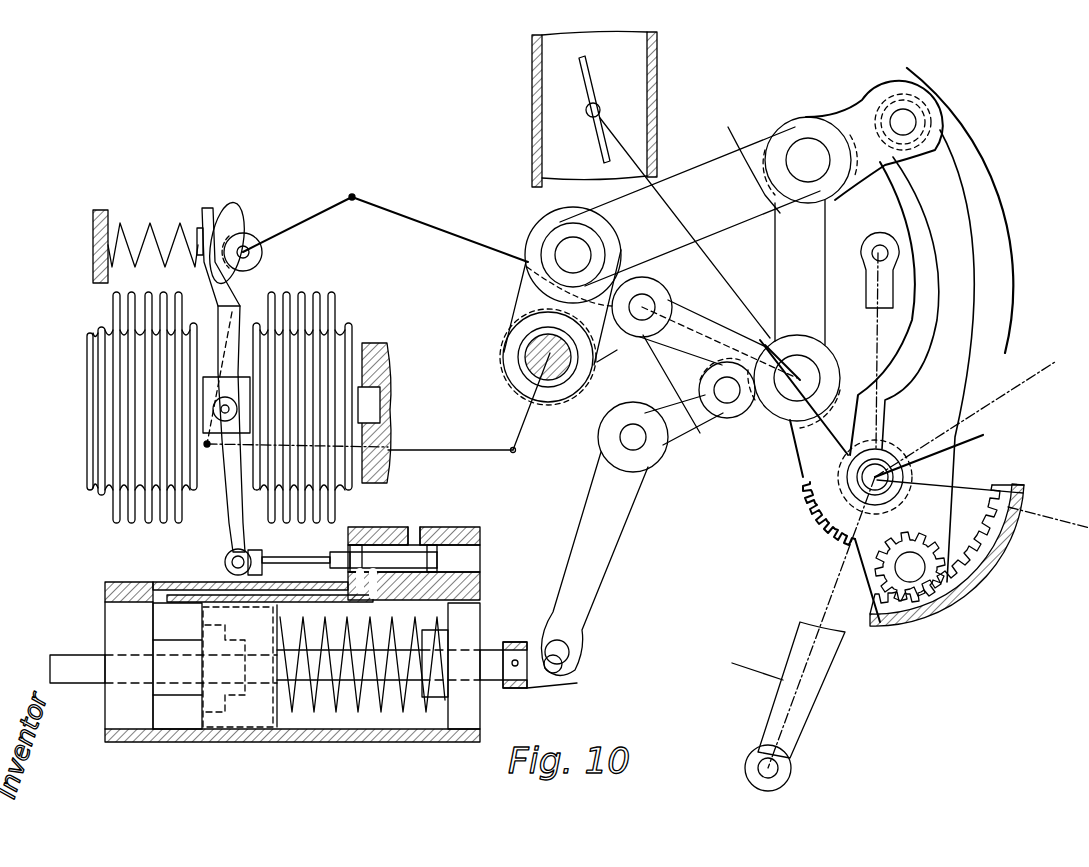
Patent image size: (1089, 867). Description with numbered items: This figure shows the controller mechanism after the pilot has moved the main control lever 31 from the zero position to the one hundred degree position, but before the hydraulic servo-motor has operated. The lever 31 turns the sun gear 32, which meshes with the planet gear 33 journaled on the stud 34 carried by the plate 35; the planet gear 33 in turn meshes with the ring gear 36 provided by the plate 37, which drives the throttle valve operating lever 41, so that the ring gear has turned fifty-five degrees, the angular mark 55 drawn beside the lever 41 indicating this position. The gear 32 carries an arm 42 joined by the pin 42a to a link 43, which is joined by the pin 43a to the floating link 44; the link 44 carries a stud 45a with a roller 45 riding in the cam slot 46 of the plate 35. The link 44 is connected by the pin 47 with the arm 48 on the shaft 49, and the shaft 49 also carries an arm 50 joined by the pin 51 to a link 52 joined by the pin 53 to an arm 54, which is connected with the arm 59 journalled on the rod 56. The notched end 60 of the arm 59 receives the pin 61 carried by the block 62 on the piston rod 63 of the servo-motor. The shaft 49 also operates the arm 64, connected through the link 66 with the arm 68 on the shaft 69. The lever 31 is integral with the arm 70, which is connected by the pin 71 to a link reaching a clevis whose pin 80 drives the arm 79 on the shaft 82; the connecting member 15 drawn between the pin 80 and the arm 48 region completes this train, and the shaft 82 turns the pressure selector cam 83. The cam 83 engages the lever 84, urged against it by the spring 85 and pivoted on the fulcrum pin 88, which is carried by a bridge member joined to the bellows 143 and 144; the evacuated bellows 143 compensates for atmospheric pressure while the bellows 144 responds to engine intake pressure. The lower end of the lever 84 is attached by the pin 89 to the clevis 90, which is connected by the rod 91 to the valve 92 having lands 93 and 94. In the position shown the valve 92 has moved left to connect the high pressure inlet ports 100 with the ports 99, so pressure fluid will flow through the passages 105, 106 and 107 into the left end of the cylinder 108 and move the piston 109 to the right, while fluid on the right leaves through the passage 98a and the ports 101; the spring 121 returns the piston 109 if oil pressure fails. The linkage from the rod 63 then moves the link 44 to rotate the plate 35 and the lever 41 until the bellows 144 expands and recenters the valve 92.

The link rod 15 is at (486, 242).
The main control lever 31 is at (797, 692).
The sun gear 32 is at (810, 502).
The planet gear 33 is at (927, 542).
The stud 34 is at (852, 577).
The plate 35 is at (993, 177).
The ring gear 36 is at (967, 583).
The plate 37 is at (993, 483).
The throttle valve operating lever 41 is at (865, 288).
The arm 42 is at (810, 443).
The pin 42a is at (788, 389).
The link 43 is at (778, 263).
The pin 43a is at (808, 158).
The floating link 44 is at (688, 177).
The roller 45 is at (925, 128).
The stud 45a is at (905, 120).
The cam slot 46 is at (957, 200).
The pin 47 is at (573, 253).
The arm 48 is at (512, 303).
The shaft 49 is at (530, 360).
The arm 50 is at (612, 360).
The pin 51 is at (645, 304).
The link 52 is at (693, 330).
The pin 53 is at (729, 386).
The arm 54 is at (700, 433).
The 55 degree position 55 is at (880, 246).
The rod 56 is at (630, 437).
The arm 59 is at (602, 560).
The notched end 60 is at (573, 653).
The pin 61 is at (560, 665).
The block 62 is at (577, 684).
The piston rod 63 is at (490, 650).
The arm 64 is at (527, 413).
The link 66 is at (430, 450).
The arm 68 is at (236, 292).
The shaft 69 is at (262, 258).
The arm 70 is at (890, 472).
The pin 71 is at (983, 435).
The arm 79 is at (328, 218).
The pin 80 is at (356, 189).
The shaft 82 is at (248, 249).
The cam 83 is at (233, 227).
The lever 84 is at (208, 208).
The spring 85 is at (115, 228).
The pin 88 is at (228, 402).
The pin 89 is at (225, 563).
The clevis 90 is at (260, 550).
The rod 91 is at (313, 558).
The valve 92 is at (437, 553).
The land 93 is at (355, 530).
The land 94 is at (432, 547).
The passage 98a is at (501, 646).
The ports 99 is at (377, 588).
The ports 100 is at (412, 530).
The ports 101 is at (473, 572).
The passage 105 is at (418, 584).
The passage 106 is at (337, 588).
The passage 107 is at (163, 592).
The cylinder 108 is at (313, 723).
The piston 109 is at (247, 718).
The spring 121 is at (368, 720).
The bellows 143 is at (337, 296).
The bellows 144 is at (113, 302).